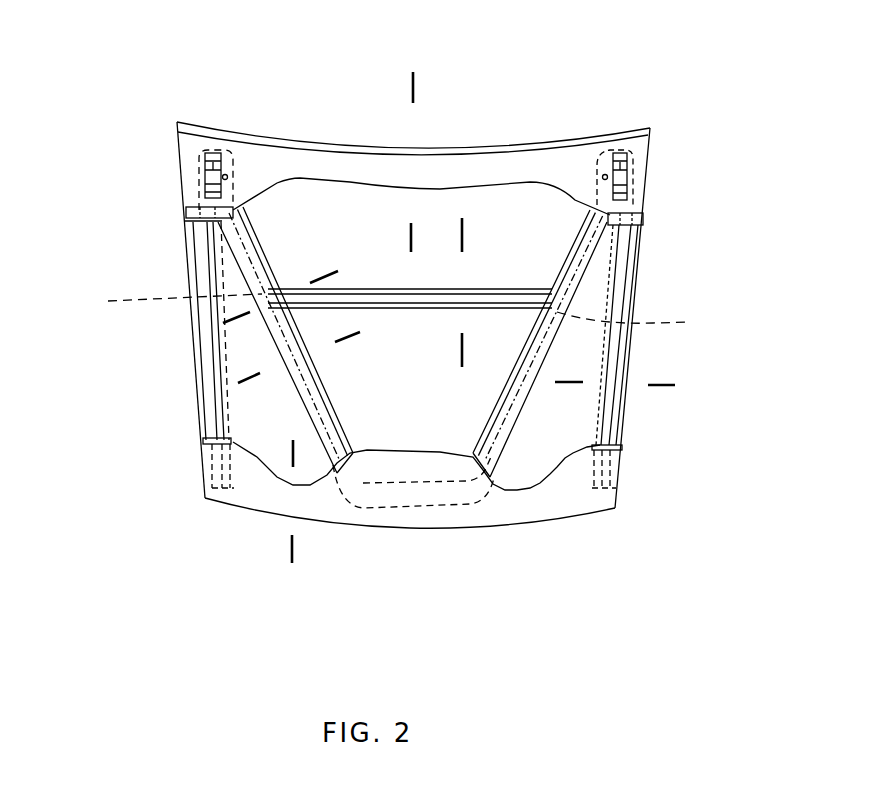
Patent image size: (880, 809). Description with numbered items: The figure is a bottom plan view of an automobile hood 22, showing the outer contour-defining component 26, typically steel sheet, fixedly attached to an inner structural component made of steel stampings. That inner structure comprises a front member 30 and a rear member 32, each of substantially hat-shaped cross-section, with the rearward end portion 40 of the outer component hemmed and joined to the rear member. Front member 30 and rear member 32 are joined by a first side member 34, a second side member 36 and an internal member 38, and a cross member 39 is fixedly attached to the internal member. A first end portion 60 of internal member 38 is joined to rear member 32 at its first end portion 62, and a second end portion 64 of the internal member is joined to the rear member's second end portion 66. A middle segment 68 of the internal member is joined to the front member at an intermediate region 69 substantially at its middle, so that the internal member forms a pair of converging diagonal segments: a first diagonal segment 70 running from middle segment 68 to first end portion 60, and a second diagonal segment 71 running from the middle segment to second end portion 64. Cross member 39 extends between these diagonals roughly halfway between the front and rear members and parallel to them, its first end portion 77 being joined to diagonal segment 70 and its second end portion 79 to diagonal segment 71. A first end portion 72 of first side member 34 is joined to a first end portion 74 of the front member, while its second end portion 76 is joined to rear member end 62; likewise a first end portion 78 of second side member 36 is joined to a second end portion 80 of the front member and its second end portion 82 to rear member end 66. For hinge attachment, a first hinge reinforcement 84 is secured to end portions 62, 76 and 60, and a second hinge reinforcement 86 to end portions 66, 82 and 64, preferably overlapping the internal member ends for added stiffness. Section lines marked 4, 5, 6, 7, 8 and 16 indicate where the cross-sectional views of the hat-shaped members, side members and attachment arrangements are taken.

The hood 22 is at (655, 243).
The outer contour-defining component 26 is at (443, 338).
The front member 30 is at (550, 512).
The rear member 32 is at (503, 152).
The first side member 34 is at (640, 293).
The second side member 36 is at (207, 343).
The internal member 38 is at (347, 430).
The cross member 39 is at (397, 290).
The rearward end portion 40 is at (303, 140).
The first end portion of internal member 60 is at (597, 210).
The first end portion of rear member 62 is at (635, 152).
The second end portion of internal member 64 is at (247, 207).
The second end portion of rear member 66 is at (190, 152).
The middle segment of internal member 68 is at (403, 483).
The intermediate region 69 is at (417, 533).
The first diagonal segment 70 is at (568, 283).
The second diagonal segment 71 is at (313, 390).
The first end portion of first side member 72 is at (622, 445).
The first end portion of front member 74 is at (618, 482).
The second end portion of first side member 76 is at (640, 230).
The first end portion of cross member 77 is at (641, 321).
The first end portion of second side member 78 is at (203, 440).
The second end portion of cross member 79 is at (167, 306).
The second end portion of front member 80 is at (205, 498).
The second end portion of second side member 82 is at (200, 222).
The first hinge reinforcement 84 is at (621, 148).
The second hinge reinforcement 86 is at (210, 148).
The section line 4- 4 is at (417, 83).
The section line 5- 5 is at (566, 380).
The section line 6- 6 is at (350, 337).
The section line 7- 7 is at (317, 448).
The section line 8- 8 is at (338, 273).
The section line 16- 16 is at (484, 228).